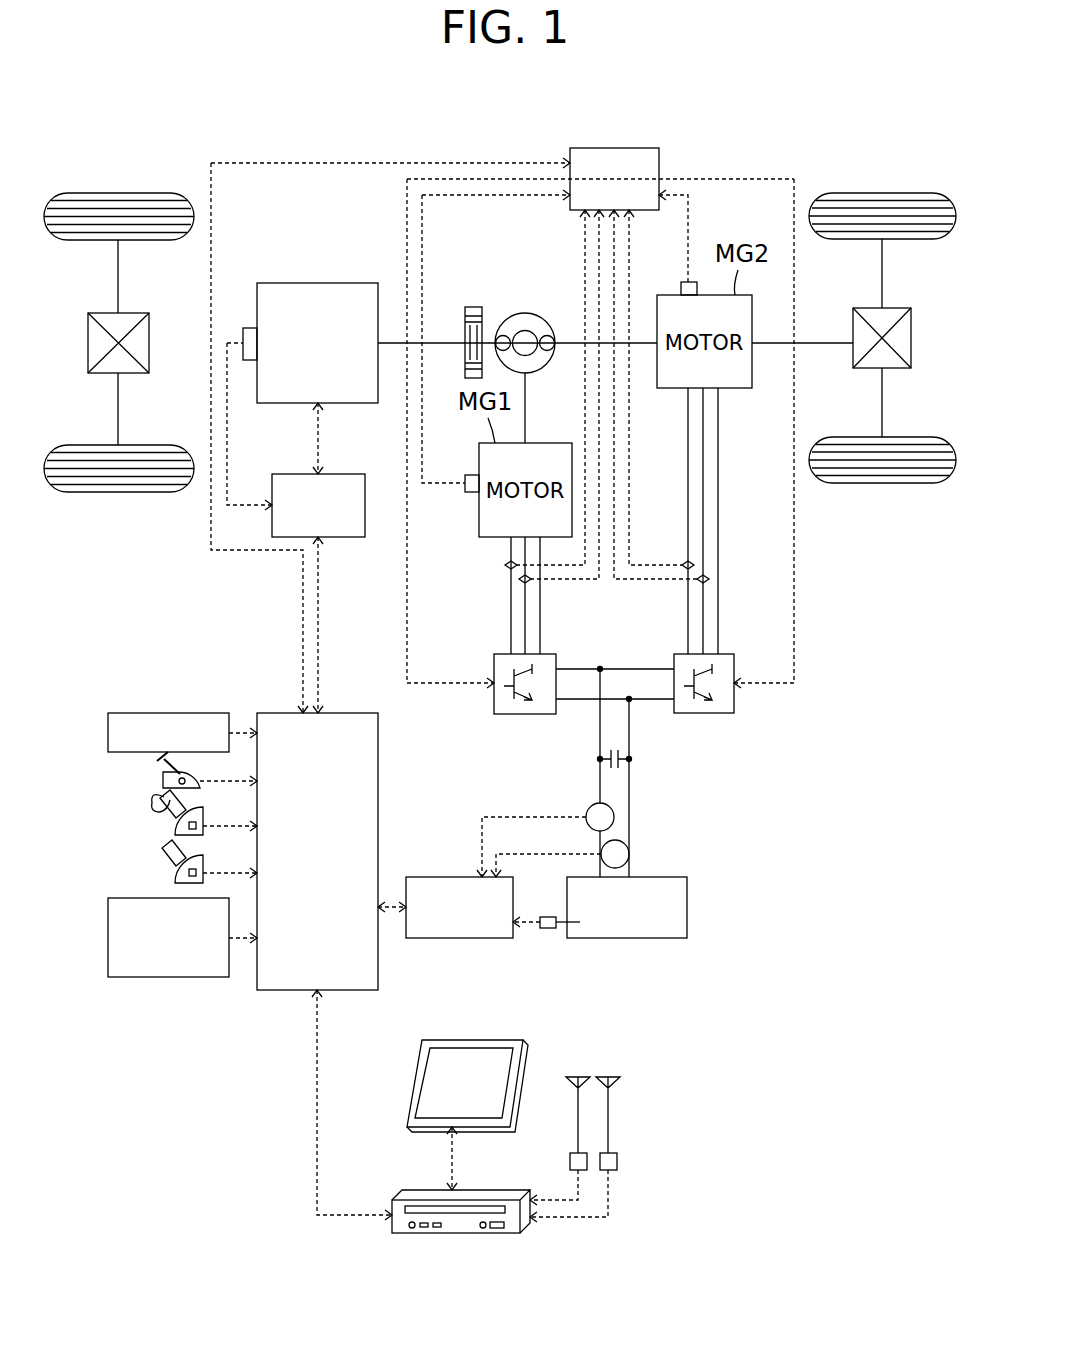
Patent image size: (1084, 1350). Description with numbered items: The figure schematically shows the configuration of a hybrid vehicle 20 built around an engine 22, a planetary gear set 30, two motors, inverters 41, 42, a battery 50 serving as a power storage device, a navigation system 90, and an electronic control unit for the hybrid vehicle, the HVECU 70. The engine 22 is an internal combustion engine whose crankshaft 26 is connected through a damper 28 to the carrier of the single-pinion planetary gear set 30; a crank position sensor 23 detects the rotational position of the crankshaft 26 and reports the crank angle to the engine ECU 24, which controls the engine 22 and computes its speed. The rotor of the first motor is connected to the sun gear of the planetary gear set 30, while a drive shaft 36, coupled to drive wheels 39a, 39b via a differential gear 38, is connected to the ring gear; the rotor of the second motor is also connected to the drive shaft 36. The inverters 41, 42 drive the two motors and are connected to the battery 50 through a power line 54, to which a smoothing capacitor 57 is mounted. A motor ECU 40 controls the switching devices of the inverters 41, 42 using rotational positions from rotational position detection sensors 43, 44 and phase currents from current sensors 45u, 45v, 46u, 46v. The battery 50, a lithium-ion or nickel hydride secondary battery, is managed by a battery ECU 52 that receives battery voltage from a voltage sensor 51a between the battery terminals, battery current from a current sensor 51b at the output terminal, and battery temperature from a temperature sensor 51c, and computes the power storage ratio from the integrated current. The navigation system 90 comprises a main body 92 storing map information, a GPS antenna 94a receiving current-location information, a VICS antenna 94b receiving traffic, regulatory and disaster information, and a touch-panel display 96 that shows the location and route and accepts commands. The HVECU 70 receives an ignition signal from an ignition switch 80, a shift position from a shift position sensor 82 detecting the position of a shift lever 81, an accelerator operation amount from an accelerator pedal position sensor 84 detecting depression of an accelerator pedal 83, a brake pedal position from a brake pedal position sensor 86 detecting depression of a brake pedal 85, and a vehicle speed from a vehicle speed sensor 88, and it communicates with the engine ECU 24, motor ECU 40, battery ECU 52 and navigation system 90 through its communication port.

The hybrid vehicle 20 is at (739, 113).
The engine 22 is at (318, 283).
The crank position sensor 23 is at (250, 328).
The engine ECU 24 is at (347, 474).
The crankshaft 26 is at (446, 343).
The damper 28 is at (476, 307).
The planetary gear set 30 is at (527, 313).
The drive shaft 36 is at (826, 343).
The differential gear 38 is at (896, 308).
The drive wheel 39a is at (885, 193).
The drive wheel 39b is at (883, 483).
The motor ECU 40 is at (614, 148).
The inverter 41 is at (548, 654).
The inverter 42 is at (724, 654).
The rotational position detection sensor 43 is at (469, 492).
The rotational position detection sensor 44 is at (690, 282).
The current sensor 45u is at (505, 565).
The current sensor 45v is at (519, 580).
The current sensor 46u is at (694, 565).
The current sensor 46v is at (709, 579).
The battery 50 is at (687, 910).
The voltage sensor 51a is at (630, 854).
The current sensor 51b is at (614, 817).
The temperature sensor 51c is at (548, 930).
The battery ECU 52 is at (450, 877).
The power line 54 is at (629, 730).
The smoothing capacitor 57 is at (629, 759).
The HVECU 70 is at (347, 713).
The ignition switch 80 is at (108, 733).
The shift lever 81 is at (162, 770).
The shift position sensor 82 is at (176, 782).
The accelerator pedal 83 is at (160, 812).
The accelerator pedal position sensor 84 is at (176, 828).
The brake pedal 85 is at (165, 860).
The brake pedal position sensor 86 is at (176, 876).
The vehicle speed sensor 88 is at (108, 922).
The navigation system 90 is at (383, 1062).
The main body 92 is at (455, 1235).
The GPS antenna 94a is at (570, 1163).
The VICS antenna 94b is at (617, 1163).
The display 96 is at (468, 1040).